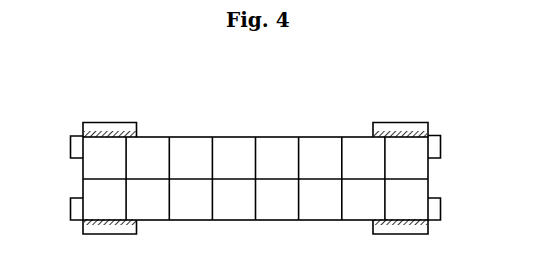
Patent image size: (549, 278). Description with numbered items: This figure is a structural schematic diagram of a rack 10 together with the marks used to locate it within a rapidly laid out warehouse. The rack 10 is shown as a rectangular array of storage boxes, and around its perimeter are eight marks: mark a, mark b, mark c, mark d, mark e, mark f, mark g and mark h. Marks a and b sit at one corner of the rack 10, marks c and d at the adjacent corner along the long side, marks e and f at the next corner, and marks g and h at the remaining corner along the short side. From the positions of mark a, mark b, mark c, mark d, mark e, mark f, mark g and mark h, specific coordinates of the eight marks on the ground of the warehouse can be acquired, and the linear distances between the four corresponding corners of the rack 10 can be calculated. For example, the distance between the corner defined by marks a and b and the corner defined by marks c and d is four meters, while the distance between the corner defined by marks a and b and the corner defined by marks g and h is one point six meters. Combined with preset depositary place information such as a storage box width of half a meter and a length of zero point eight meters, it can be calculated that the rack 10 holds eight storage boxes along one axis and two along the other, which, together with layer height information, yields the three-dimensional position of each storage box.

The rack 10 is at (283, 110).
The mark a is at (66, 146).
The mark b is at (110, 110).
The mark c is at (400, 111).
The mark d is at (447, 143).
The mark e is at (446, 205).
The mark f is at (400, 244).
The mark g is at (110, 243).
The mark h is at (66, 210).